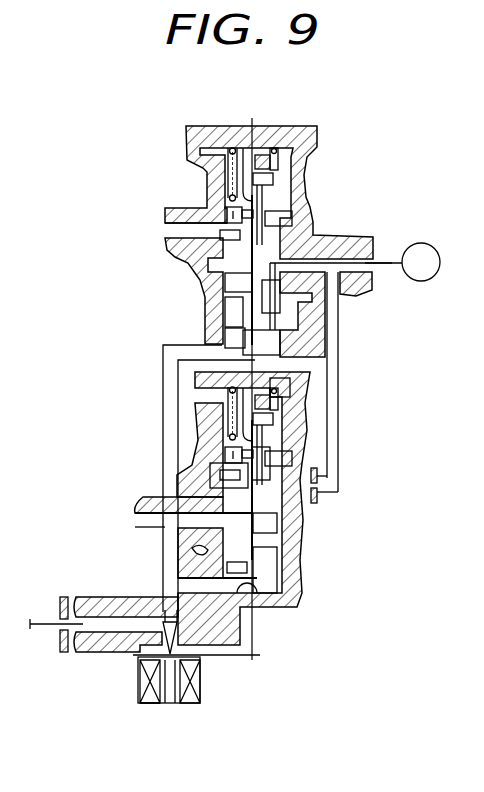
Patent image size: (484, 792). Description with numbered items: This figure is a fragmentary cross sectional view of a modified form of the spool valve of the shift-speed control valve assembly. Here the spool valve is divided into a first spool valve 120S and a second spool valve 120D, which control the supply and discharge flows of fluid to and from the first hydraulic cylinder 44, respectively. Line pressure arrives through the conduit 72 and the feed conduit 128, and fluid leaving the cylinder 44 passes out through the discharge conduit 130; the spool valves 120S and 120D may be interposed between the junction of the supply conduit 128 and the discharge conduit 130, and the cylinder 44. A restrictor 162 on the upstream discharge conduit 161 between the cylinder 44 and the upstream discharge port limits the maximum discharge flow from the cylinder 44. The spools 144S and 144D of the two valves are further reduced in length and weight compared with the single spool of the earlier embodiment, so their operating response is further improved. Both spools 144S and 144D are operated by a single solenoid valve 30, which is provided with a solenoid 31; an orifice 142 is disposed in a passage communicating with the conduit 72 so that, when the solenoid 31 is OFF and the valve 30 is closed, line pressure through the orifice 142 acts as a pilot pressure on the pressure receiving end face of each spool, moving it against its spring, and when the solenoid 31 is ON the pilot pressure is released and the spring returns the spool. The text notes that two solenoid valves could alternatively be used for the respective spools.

The first spool valve 120S is at (312, 188).
The spool of the first spool valve 144S is at (262, 146).
The feed conduit 128 is at (180, 232).
The first hydraulic cylinder 44 is at (420, 250).
The second spool valve 120D is at (305, 562).
The restrictor 162 is at (319, 473).
The upstream discharge conduit 161 is at (323, 494).
The discharge conduit 130 is at (145, 500).
The orifice 142 is at (60, 608).
The conduit 72 is at (42, 628).
The spool of the second spool valve 144D is at (255, 553).
The solenoid valve 30 is at (205, 680).
The solenoid 31 is at (148, 703).